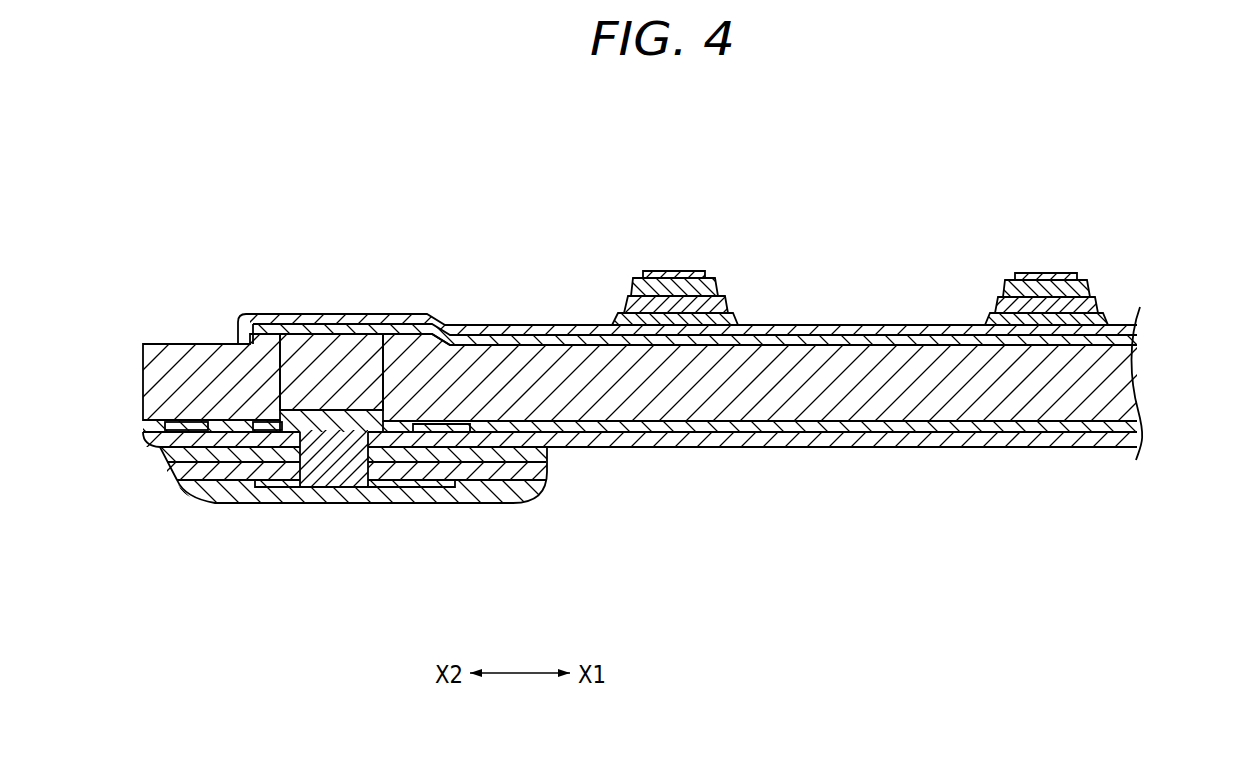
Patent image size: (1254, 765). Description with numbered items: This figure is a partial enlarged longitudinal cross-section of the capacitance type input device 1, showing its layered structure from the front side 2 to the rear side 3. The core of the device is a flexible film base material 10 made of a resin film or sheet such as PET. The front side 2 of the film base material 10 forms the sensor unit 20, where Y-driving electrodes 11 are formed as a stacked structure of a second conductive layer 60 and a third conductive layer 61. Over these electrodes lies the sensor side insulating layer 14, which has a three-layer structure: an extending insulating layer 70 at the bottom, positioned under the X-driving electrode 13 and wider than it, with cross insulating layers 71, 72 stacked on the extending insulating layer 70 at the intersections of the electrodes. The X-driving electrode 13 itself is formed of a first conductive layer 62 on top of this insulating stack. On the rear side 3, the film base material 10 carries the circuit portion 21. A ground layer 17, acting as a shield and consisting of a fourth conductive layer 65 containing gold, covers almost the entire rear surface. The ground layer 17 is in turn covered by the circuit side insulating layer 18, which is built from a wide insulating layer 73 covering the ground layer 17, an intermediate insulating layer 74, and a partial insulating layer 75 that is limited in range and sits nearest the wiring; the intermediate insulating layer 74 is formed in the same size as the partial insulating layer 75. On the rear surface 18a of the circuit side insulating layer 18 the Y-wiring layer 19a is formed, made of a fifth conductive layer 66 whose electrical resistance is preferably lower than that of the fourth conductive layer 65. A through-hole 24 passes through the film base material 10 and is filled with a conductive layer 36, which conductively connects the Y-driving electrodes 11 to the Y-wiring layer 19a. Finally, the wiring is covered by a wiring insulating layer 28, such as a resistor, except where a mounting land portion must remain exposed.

The capacitance type input device 1 is at (895, 165).
The front side 2 is at (828, 225).
The rear side 3 is at (823, 488).
The film base material 10 is at (1128, 373).
The Y-driving electrode 11 is at (627, 349).
The X-driving electrode 13 is at (876, 252).
The first conductive layer 62 is at (876, 252).
The sensor side insulating layer 14 is at (876, 266).
The ground layer 17 is at (627, 416).
The fourth conductive layer 65 is at (740, 440).
The circuit side insulating layer 18 is at (627, 452).
The rear surface of the circuit side insulating layer 18a is at (497, 502).
The Y-wiring layer 19a is at (627, 434).
The fifth conductive layer 66 is at (333, 484).
The sensor unit 20 is at (917, 297).
The circuit portion 21 is at (905, 498).
The through-hole 24 is at (327, 357).
The wiring insulating layer 28 is at (435, 502).
The conductive layer 36 is at (315, 440).
The second conductive layer 60 is at (473, 325).
The third conductive layer 61 is at (510, 228).
The extending insulating layer 70 is at (733, 320).
The cross insulating layer 71 is at (720, 290).
The cross insulating layer 72 is at (706, 272).
The wide insulating layer 73 is at (664, 450).
The intermediate insulating layer 74 is at (546, 452).
The partial insulating layer 75 is at (542, 460).